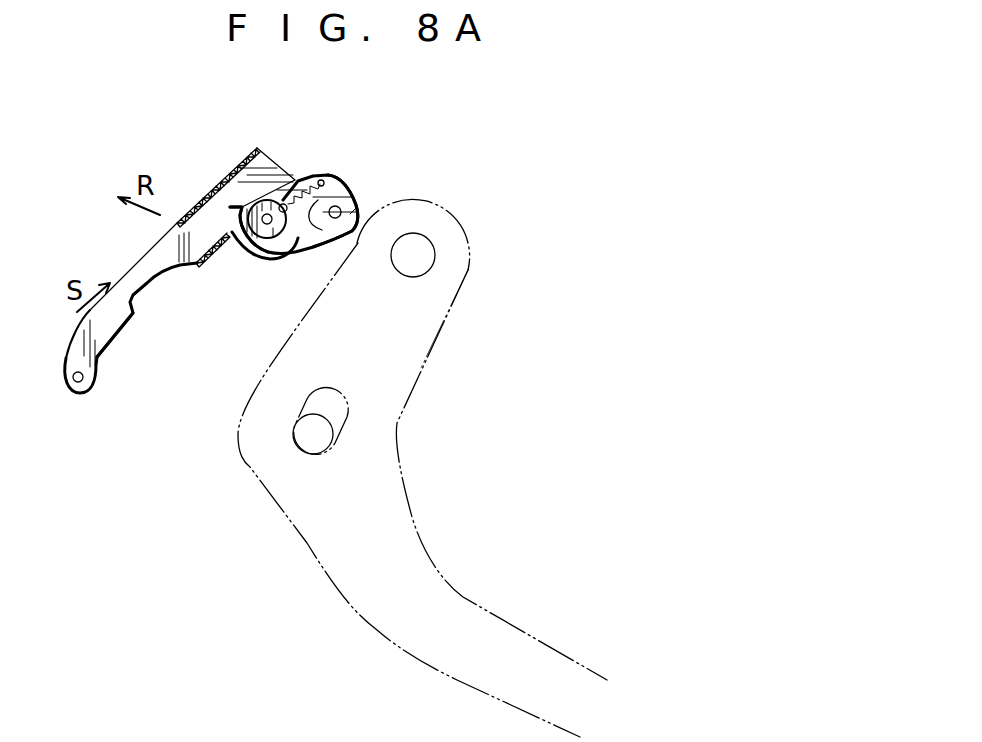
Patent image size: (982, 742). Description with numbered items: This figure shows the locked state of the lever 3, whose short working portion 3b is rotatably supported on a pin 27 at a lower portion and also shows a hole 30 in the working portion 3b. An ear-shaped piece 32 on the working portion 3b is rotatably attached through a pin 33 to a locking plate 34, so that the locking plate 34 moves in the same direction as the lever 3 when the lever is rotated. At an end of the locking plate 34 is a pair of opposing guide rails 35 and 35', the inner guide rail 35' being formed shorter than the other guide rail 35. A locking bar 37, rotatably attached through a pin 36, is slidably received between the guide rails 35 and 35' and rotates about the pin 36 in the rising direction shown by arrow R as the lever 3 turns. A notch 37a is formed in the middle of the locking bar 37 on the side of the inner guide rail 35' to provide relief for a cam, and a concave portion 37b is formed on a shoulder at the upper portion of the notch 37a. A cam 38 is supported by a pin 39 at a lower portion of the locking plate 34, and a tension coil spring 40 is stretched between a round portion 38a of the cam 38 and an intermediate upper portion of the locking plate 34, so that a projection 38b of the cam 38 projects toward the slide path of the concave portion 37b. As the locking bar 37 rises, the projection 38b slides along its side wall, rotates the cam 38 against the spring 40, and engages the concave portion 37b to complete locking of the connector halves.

The lever 3 is at (463, 597).
The working portion 3b is at (407, 363).
The pin 27 is at (323, 440).
The shaft hole 30 is at (421, 260).
The ear-shaped piece 32 is at (378, 218).
The pin 33 is at (350, 214).
The locking plate 34 is at (298, 180).
The guide rail 35 is at (252, 166).
The inner guide rail 35' is at (222, 286).
The pin 36 is at (80, 384).
The locking bar 37 is at (148, 270).
The notch 37a is at (133, 295).
The concave portion 37b is at (183, 268).
The cam 38 is at (383, 290).
The round portion 38a is at (297, 252).
The projection 38b is at (243, 250).
The pin 39 is at (268, 216).
The tension coil spring 40 is at (330, 174).